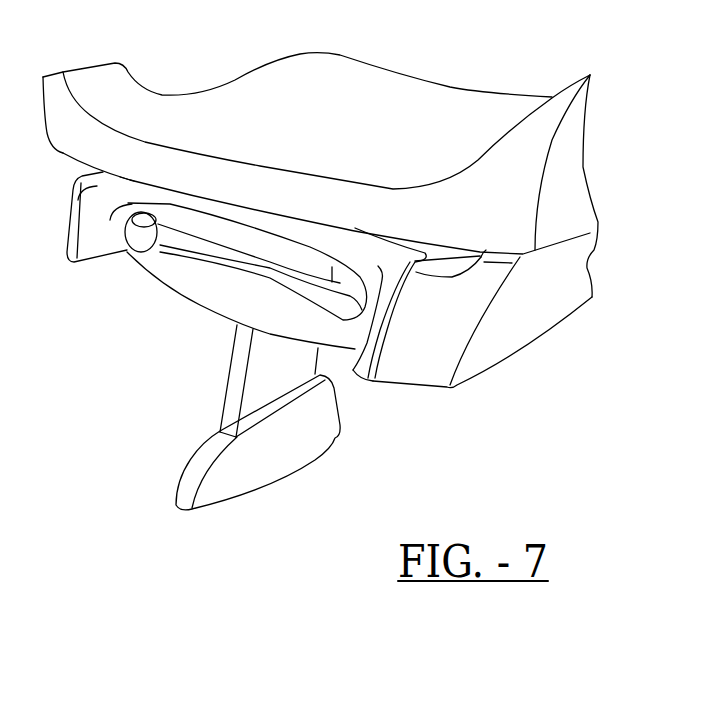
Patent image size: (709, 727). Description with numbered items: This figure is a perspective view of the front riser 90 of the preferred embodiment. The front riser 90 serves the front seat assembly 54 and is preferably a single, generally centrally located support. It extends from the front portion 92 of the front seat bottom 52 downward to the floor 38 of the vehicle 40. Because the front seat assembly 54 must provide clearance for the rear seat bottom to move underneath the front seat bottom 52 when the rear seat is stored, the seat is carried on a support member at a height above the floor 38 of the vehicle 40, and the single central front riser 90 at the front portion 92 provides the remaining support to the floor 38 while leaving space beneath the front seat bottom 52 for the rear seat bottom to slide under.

The floor 38 is at (308, 551).
The vehicle 40 is at (517, 445).
The front seat bottom 52 is at (507, 117).
The front seat assembly 54 is at (410, 103).
The front riser 90 is at (253, 366).
The front portion 92 is at (462, 148).